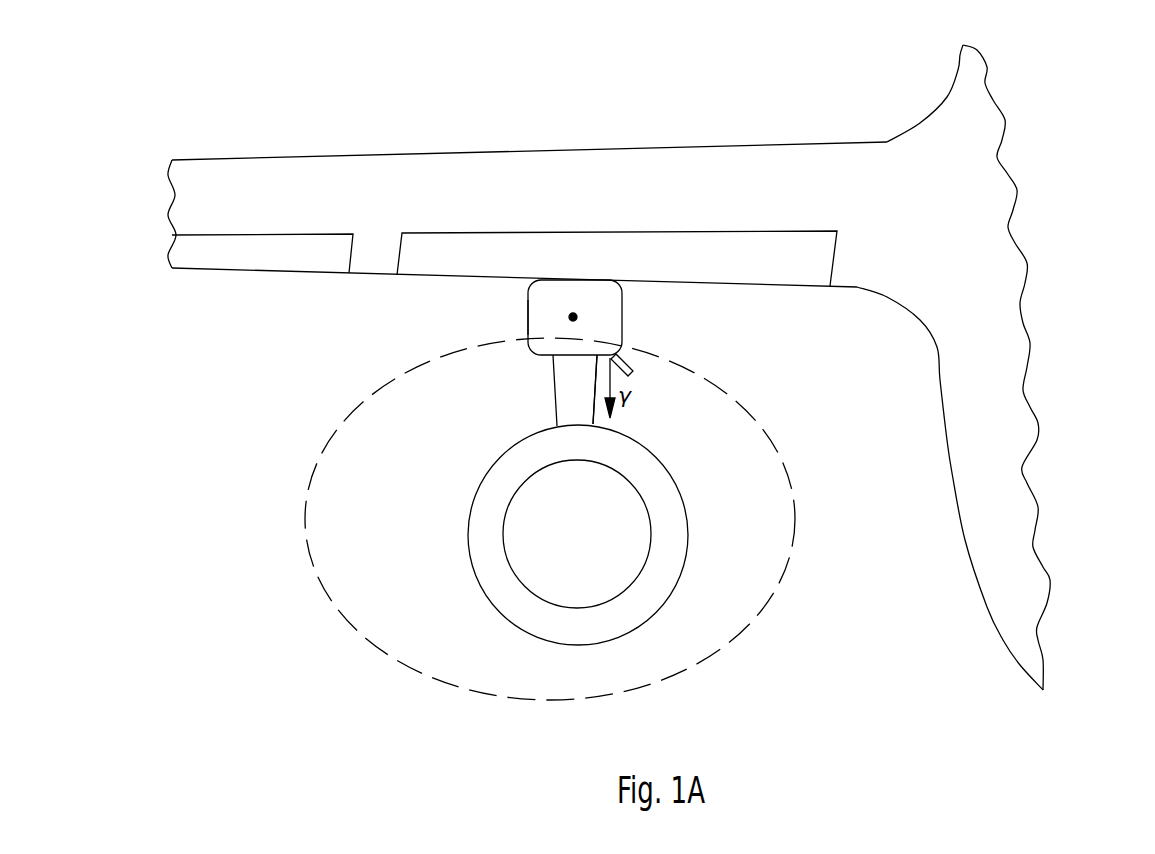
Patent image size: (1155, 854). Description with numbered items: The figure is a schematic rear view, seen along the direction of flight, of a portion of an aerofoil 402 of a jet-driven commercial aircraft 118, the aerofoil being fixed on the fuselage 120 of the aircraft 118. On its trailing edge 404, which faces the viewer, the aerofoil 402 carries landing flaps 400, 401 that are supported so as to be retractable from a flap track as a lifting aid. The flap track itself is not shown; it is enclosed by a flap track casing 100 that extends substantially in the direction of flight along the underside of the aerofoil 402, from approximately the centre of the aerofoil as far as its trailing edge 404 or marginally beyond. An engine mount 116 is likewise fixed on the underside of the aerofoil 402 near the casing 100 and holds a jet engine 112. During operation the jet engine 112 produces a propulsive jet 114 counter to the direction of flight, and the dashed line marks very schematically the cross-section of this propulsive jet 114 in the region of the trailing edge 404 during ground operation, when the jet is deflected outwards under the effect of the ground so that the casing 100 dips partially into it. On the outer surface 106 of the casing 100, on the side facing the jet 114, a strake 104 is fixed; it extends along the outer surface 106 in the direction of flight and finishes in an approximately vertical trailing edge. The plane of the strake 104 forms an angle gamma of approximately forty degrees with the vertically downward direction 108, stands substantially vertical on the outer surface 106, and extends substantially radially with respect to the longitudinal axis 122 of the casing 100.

The jet-driven commercial aircraft 118 is at (647, 367).
The aerofoil 402 is at (537, 150).
The trailing edge 404 is at (858, 297).
The landing flap 401 is at (256, 248).
The landing flap 400 is at (759, 245).
The fuselage 120 is at (1000, 640).
The flap track casing 100 is at (528, 291).
The outer surface 106 is at (520, 323).
The longitudinal axis 122 is at (575, 313).
The strake 104 is at (622, 365).
The vertically downward direction 108 is at (598, 366).
The engine mount 116 is at (575, 403).
The jet engine 112 is at (468, 535).
The propulsive jet 114 is at (305, 514).